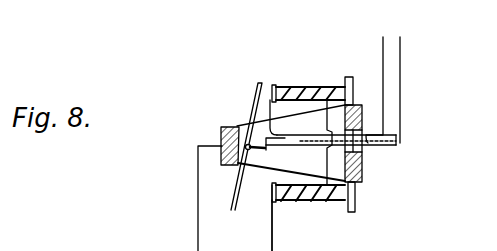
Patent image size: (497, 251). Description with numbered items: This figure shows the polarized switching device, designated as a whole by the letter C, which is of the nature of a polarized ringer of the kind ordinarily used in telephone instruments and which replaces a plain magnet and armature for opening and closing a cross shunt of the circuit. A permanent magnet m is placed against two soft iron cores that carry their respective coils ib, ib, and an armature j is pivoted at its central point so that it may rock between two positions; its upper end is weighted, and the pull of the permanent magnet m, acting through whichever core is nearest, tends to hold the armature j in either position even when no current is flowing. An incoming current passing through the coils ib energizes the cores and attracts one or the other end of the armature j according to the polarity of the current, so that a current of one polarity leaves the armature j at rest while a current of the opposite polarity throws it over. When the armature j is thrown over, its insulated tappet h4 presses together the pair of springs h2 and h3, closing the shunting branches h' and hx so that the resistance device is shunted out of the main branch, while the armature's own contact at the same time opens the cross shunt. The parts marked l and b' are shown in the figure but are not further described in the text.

The armature j is at (253, 111).
The permanent magnet m is at (222, 131).
The coils ib is at (304, 94).
The shunting branch h' is at (367, 87).
The shunting branch hx is at (418, 89).
The spring h2 is at (397, 145).
The spring h3 is at (362, 148).
The insulated tappet h4 is at (256, 151).
The stem l is at (355, 198).
The frame b' is at (218, 198).
The polarized device C is at (286, 225).